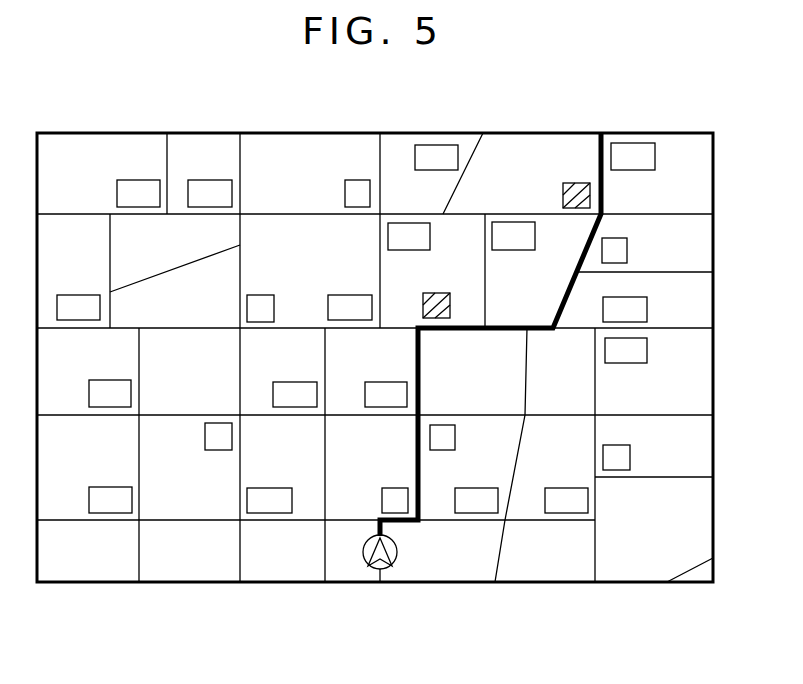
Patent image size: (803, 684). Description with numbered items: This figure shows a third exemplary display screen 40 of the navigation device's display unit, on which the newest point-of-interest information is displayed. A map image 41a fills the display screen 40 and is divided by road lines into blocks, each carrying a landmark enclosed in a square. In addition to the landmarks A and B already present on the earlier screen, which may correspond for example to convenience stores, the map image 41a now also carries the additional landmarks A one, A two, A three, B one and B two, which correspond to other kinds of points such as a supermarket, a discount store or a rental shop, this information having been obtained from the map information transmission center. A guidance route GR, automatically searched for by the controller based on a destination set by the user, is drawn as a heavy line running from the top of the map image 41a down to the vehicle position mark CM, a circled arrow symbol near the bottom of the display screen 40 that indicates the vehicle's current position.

The display screen 40 is at (713, 125).
The guidance route GR is at (618, 193).
The vehicle position mark CM is at (363, 553).
The map image 41a is at (517, 594).